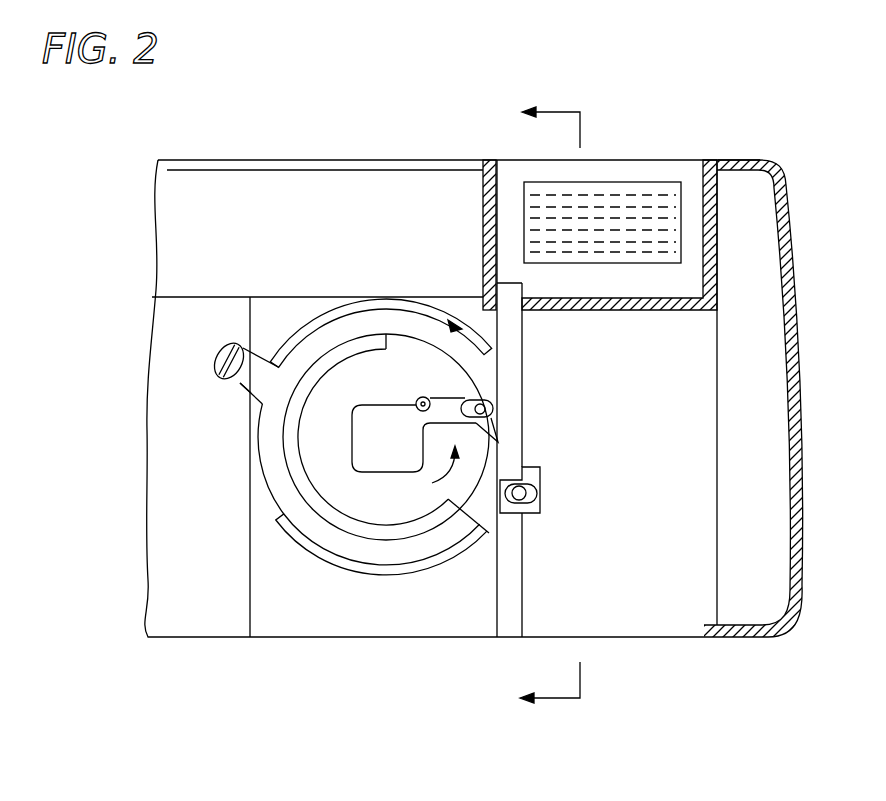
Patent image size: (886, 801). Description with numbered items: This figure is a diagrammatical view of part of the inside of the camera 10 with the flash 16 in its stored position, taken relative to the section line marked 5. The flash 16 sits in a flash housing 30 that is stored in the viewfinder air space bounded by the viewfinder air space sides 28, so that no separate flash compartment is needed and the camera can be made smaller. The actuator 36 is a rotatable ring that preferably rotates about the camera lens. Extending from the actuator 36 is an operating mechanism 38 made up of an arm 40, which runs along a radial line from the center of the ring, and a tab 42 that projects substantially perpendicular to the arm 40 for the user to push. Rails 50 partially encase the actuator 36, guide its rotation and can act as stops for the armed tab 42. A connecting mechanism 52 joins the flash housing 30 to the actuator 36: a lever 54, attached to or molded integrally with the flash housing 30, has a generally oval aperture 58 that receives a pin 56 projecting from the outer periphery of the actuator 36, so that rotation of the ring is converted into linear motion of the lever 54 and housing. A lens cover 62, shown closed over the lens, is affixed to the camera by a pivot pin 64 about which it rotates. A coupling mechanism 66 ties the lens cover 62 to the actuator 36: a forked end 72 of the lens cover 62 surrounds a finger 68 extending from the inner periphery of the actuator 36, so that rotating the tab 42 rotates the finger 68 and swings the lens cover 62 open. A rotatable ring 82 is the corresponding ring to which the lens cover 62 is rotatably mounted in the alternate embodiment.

The camera 10 is at (103, 212).
The flash 16 is at (623, 203).
The viewfinder air space sides 28 is at (490, 167).
The flash housing 30 is at (522, 163).
The section line 5- 5 is at (539, 408).
The actuator 36 is at (245, 455).
The operating mechanism 38 is at (215, 400).
The arm 40 is at (243, 391).
The tab 42 is at (220, 354).
The rails 50 is at (342, 310).
The connecting mechanism 52 is at (540, 548).
The lever 54 is at (513, 367).
The pin 56 is at (541, 509).
The aperture 58 is at (509, 505).
The lens cover 62 is at (378, 459).
The pivot pin 64 is at (430, 397).
The coupling mechanism 66 is at (414, 450).
The finger 68 is at (493, 408).
The forked end 72 is at (499, 442).
The rotatable ring 82 is at (278, 490).